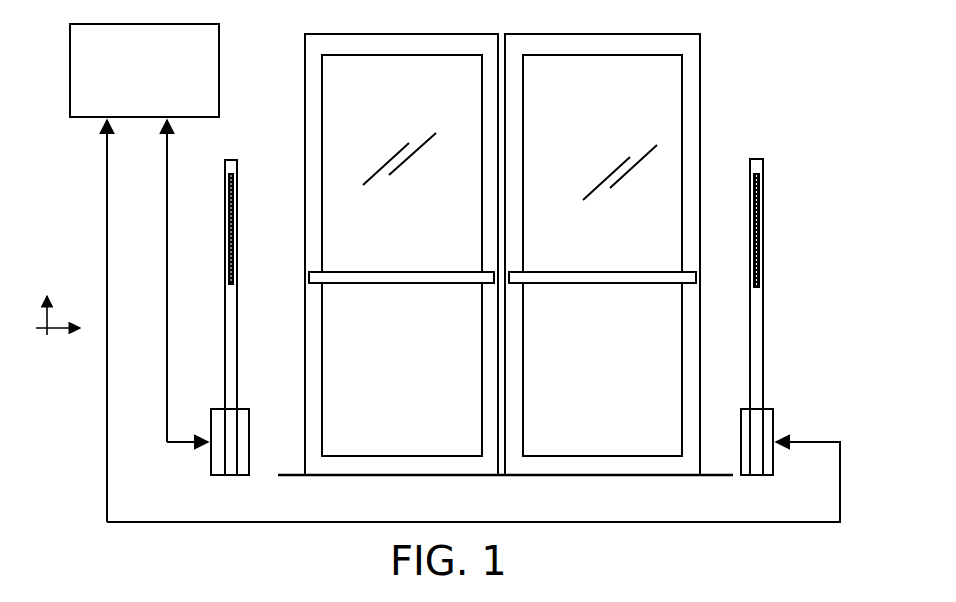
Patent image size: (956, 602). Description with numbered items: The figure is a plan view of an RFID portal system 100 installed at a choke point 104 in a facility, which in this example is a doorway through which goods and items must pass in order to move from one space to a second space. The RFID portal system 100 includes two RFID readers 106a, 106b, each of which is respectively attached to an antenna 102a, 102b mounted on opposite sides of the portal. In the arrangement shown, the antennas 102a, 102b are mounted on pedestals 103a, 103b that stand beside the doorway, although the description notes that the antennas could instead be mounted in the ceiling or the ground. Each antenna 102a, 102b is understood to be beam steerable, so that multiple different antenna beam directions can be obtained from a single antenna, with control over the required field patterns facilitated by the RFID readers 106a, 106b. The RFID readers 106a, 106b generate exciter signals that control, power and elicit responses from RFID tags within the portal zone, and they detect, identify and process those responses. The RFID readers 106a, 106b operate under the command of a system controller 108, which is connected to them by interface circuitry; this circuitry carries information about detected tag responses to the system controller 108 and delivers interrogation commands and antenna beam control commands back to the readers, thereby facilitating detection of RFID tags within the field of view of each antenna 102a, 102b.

The RFID portal system 100 is at (768, 61).
The antenna 102a is at (226, 255).
The antenna 102b is at (763, 255).
The pedestal 103a is at (236, 320).
The pedestal 103b is at (750, 318).
The choke point 104 is at (701, 119).
The RFID reader 106a is at (212, 409).
The RFID reader 106b is at (771, 409).
The system controller 108 is at (144, 70).